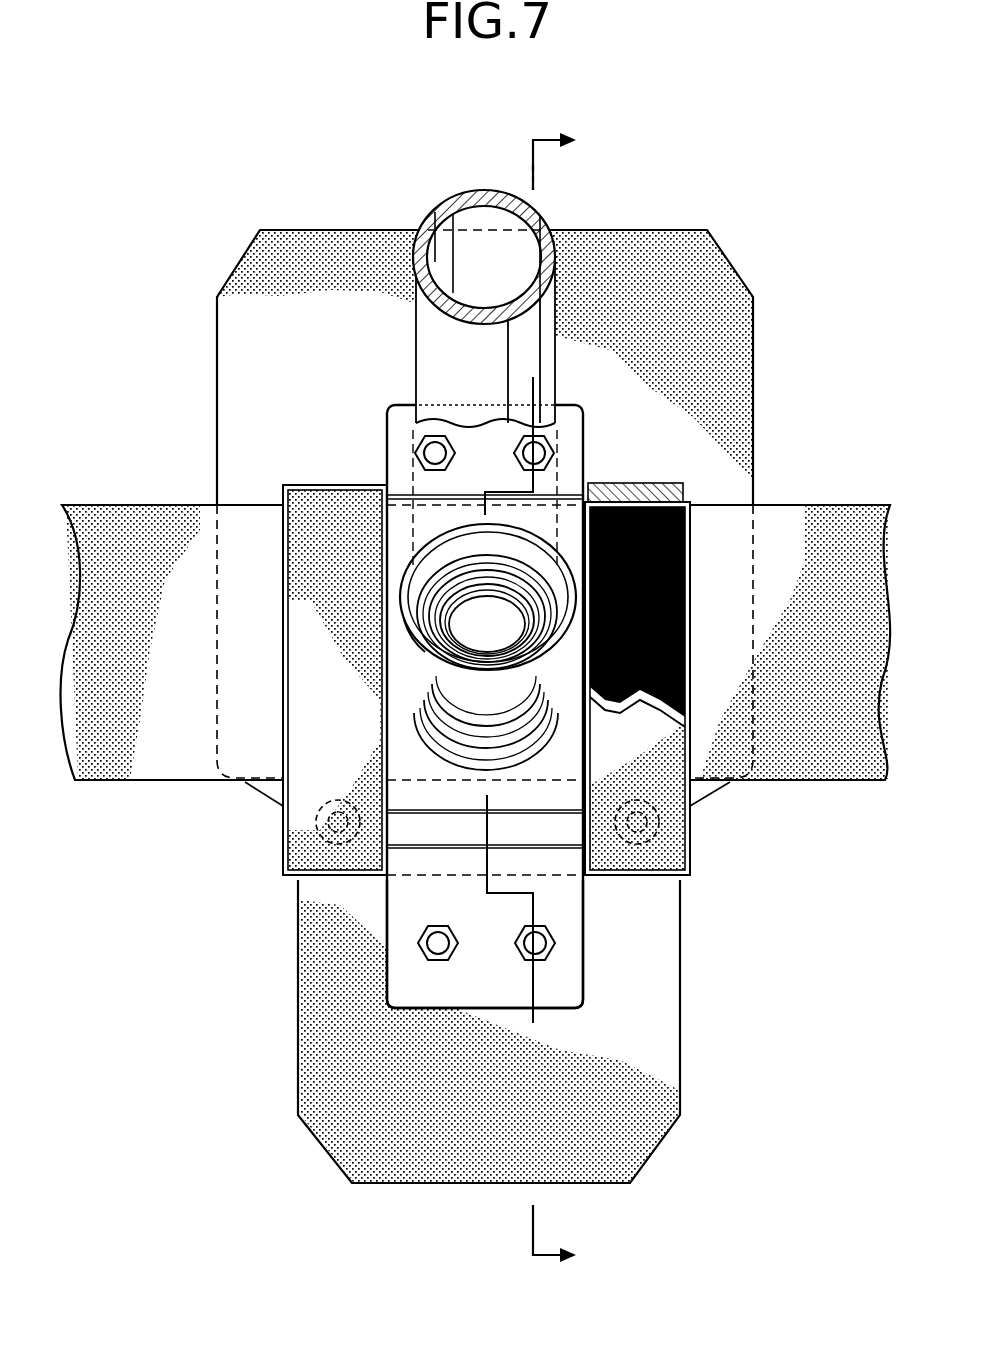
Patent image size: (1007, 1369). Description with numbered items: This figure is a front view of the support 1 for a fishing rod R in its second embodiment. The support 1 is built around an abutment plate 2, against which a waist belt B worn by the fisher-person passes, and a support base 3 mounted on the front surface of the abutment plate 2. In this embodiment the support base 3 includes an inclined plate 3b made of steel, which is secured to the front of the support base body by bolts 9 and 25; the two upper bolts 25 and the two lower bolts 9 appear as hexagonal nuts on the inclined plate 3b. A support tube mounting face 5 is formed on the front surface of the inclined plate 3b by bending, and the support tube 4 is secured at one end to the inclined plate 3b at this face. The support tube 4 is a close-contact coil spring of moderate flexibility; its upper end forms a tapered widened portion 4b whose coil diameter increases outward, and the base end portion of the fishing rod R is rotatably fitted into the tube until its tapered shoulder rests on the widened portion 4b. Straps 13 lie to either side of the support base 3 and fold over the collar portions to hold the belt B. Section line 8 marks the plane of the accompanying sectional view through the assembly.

The support 1 is at (476, 698).
The abutment plate 2 is at (745, 385).
The support base 3 is at (398, 696).
The inclined plate 3b is at (400, 920).
The support tube 4 is at (437, 647).
The widened portion 4b is at (398, 596).
The support tube mounting face 5 is at (405, 760).
The section line 8- 8 is at (530, 698).
The bolt 9 is at (525, 952).
The strap 13 is at (324, 484).
The bolt 25 is at (532, 441).
The fishing rod R is at (450, 212).
The waist belt B is at (825, 760).